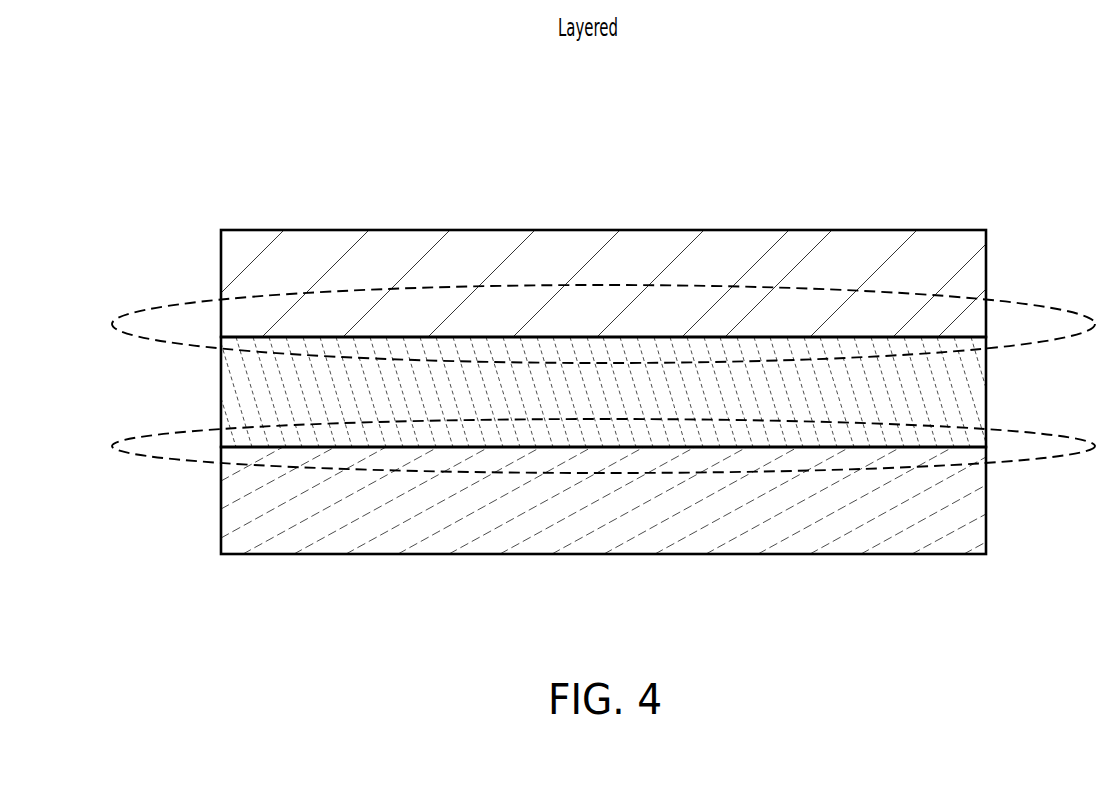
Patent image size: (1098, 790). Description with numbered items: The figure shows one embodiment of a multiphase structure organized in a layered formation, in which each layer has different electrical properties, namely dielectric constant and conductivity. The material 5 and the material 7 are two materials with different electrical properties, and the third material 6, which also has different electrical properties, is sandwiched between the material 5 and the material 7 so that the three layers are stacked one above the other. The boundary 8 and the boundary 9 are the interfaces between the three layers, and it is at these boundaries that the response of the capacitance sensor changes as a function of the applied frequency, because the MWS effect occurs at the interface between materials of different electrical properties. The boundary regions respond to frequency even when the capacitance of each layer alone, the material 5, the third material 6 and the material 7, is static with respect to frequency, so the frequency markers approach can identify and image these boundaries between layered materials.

The material 5 is at (949, 291).
The third material 6 is at (972, 402).
The material 7 is at (961, 534).
The boundary 8 is at (182, 330).
The boundary 9 is at (182, 447).